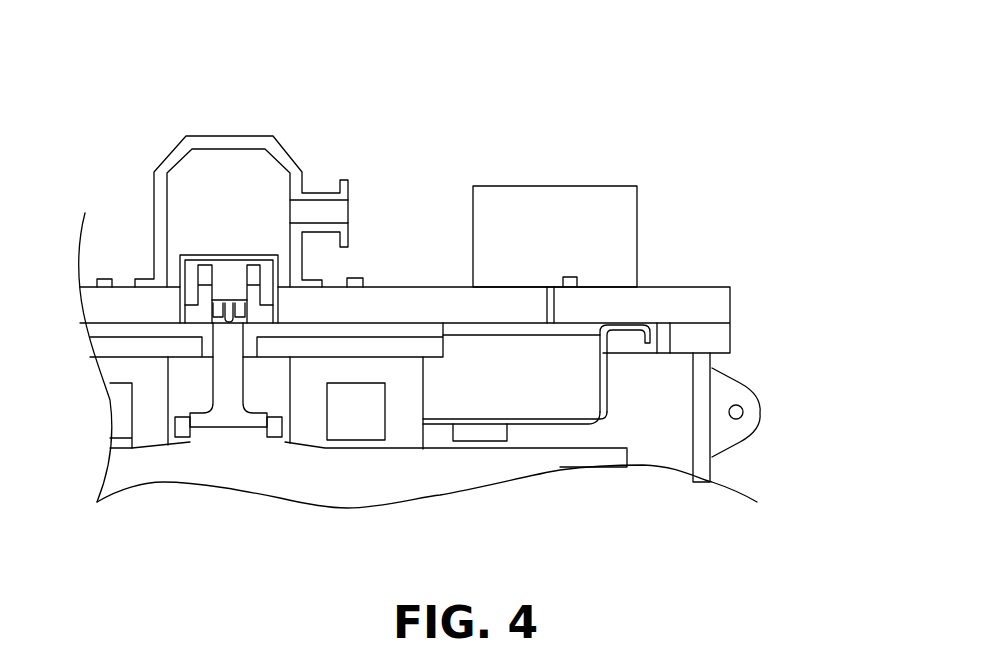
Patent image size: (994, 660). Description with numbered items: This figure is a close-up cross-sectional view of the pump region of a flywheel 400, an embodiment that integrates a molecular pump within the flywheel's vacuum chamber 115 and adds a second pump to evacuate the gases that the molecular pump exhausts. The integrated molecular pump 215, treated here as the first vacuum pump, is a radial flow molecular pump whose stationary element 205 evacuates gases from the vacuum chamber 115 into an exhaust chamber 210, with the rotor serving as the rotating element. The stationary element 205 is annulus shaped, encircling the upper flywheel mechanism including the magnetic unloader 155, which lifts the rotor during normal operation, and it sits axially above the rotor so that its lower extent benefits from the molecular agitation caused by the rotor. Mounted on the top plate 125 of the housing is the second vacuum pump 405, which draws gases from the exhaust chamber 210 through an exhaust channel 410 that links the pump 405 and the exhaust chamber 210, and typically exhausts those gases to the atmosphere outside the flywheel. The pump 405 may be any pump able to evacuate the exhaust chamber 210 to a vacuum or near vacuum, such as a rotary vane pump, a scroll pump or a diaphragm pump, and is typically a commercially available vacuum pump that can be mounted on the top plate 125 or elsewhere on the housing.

The flywheel 400 is at (333, 65).
The top plate 125 is at (123, 300).
The pump 405 is at (637, 235).
The exhaust channel 410 is at (557, 304).
The exhaust chamber 210 is at (562, 385).
The stationary element 205 is at (508, 438).
The molecular pump 215 is at (875, 370).
The vacuum chamber 115 is at (517, 463).
The magnetic unloader 155 is at (397, 438).